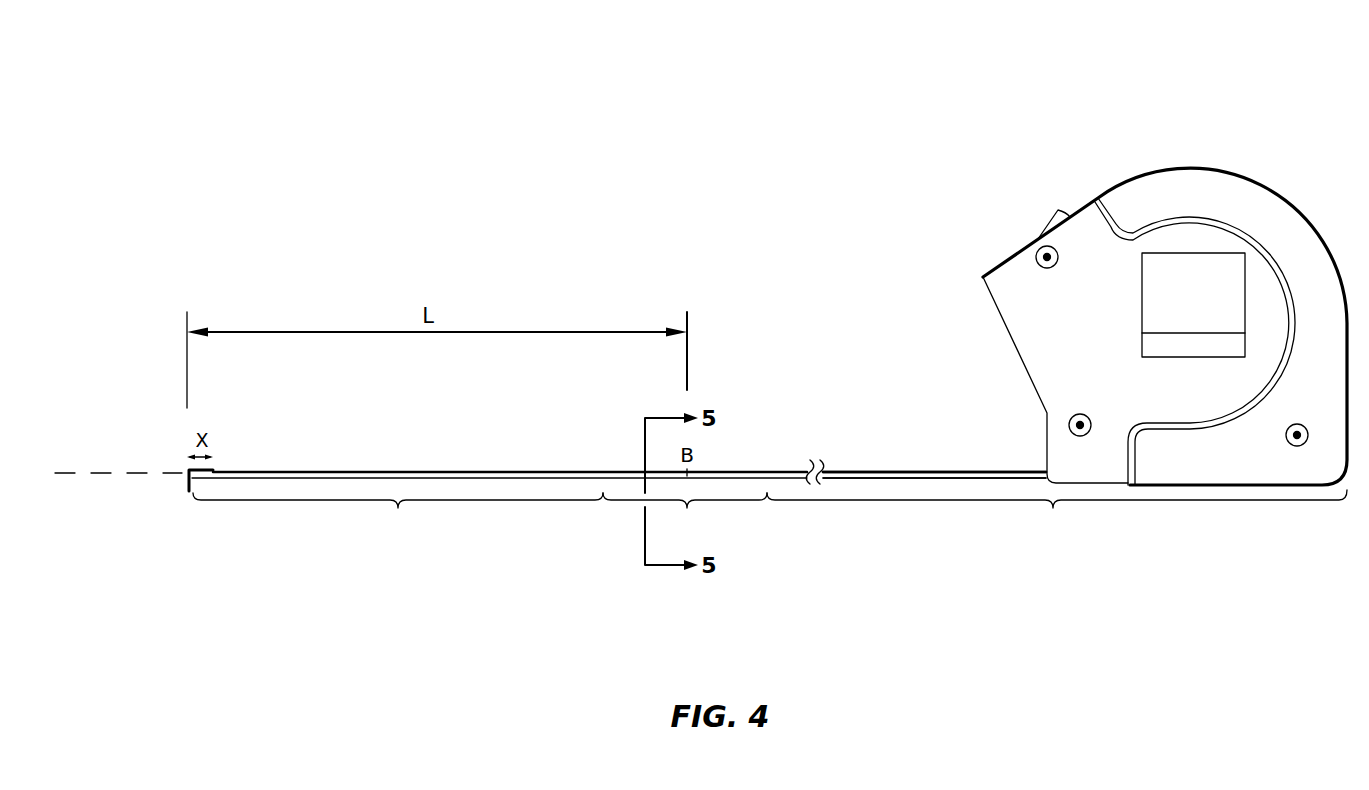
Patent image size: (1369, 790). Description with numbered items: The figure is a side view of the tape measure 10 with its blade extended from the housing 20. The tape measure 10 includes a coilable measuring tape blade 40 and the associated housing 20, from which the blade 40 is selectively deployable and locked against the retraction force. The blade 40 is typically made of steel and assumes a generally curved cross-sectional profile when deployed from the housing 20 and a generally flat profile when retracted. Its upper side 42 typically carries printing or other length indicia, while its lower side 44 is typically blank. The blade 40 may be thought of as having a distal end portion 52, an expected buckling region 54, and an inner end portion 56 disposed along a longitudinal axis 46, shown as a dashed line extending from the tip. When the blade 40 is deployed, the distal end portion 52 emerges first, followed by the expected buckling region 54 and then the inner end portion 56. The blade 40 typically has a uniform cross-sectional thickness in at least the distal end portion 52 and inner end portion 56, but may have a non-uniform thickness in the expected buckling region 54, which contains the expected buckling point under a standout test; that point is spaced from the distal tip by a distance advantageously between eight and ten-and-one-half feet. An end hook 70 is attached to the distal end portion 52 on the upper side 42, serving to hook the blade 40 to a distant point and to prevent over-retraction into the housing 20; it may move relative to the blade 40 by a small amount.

The tape measure 10 is at (681, 110).
The housing 20 is at (1008, 292).
The tape blade 40 is at (313, 471).
The upper side 42 is at (890, 471).
The lower side 44 is at (908, 478).
The longitudinal axis 46 is at (122, 473).
The distal end portion 52 is at (398, 516).
The expected buckling region 54 is at (685, 516).
The inner end portion 56 is at (1057, 514).
The end hook 70 is at (188, 483).